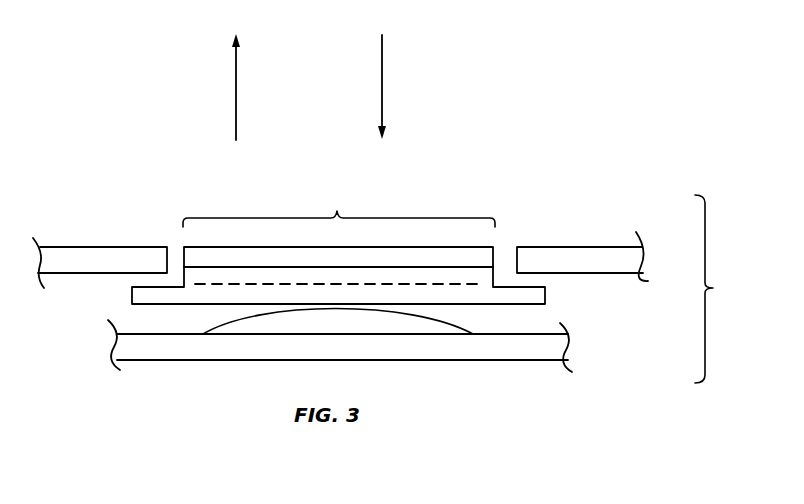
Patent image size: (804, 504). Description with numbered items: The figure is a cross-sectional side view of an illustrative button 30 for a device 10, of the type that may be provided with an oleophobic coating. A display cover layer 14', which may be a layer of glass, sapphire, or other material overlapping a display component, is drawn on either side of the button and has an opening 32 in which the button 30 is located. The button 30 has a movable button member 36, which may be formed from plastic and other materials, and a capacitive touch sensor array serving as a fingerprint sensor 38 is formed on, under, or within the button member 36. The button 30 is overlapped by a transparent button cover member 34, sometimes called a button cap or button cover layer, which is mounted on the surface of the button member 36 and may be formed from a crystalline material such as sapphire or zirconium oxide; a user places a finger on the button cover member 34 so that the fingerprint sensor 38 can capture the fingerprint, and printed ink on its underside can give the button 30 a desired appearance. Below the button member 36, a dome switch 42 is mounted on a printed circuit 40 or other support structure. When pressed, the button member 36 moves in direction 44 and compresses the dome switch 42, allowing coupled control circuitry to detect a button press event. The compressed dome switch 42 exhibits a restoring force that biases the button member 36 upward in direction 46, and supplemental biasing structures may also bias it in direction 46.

The device 10 is at (718, 289).
The display cover layer 14' is at (340, 244).
The button 30 is at (449, 178).
The opening 32 is at (339, 208).
The button cover member 34 is at (482, 252).
The button member 36 is at (533, 296).
The fingerprint sensor 38 is at (198, 288).
The printed circuit 40 is at (198, 350).
The dome switch 42 is at (453, 327).
The direction 44 is at (233, 92).
The direction 46 is at (384, 82).